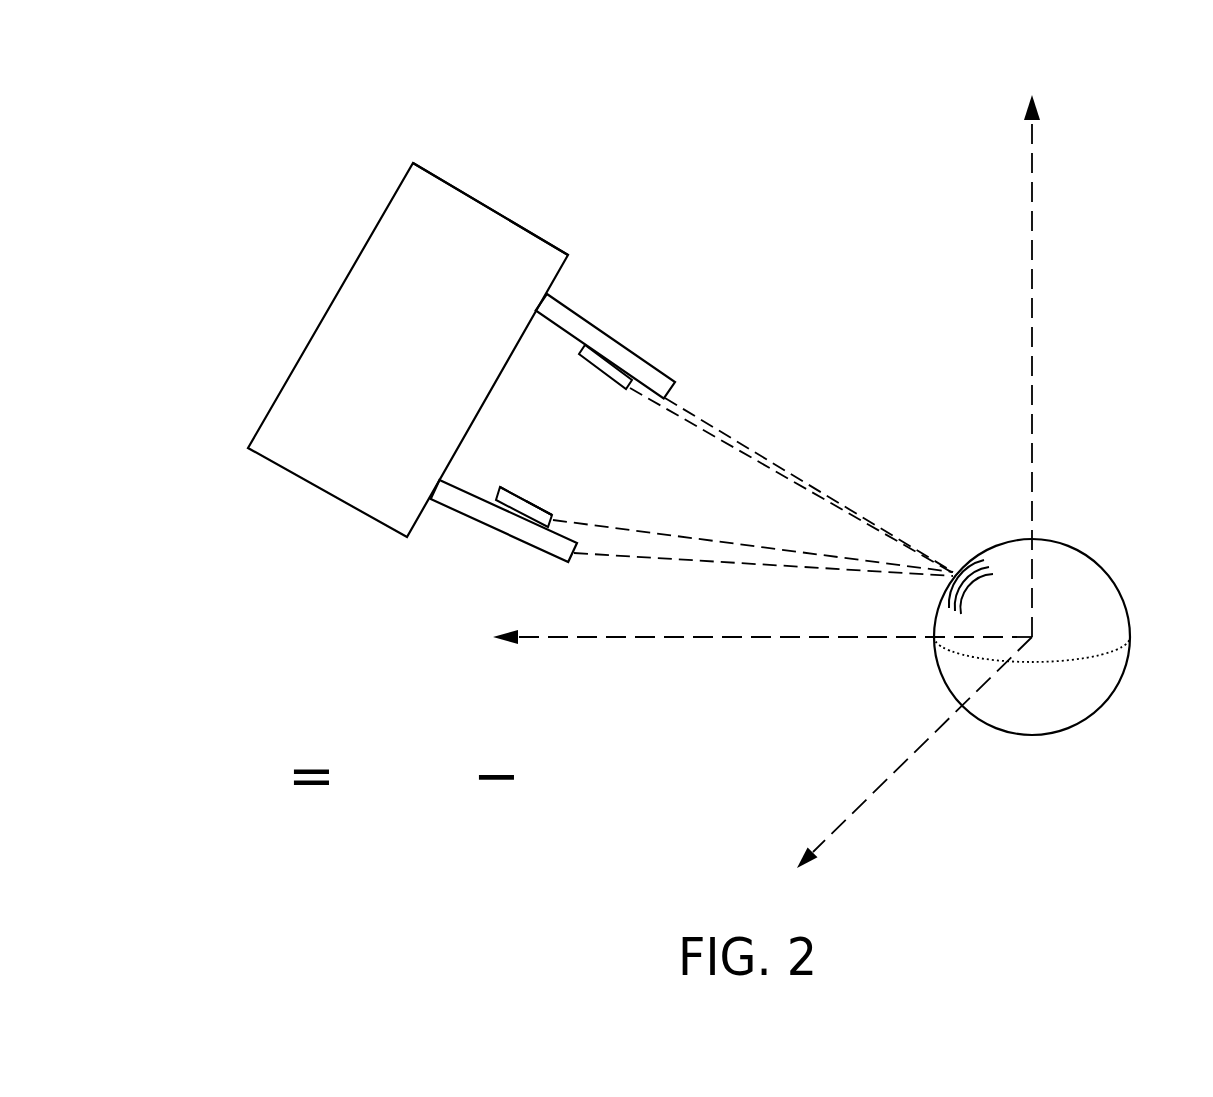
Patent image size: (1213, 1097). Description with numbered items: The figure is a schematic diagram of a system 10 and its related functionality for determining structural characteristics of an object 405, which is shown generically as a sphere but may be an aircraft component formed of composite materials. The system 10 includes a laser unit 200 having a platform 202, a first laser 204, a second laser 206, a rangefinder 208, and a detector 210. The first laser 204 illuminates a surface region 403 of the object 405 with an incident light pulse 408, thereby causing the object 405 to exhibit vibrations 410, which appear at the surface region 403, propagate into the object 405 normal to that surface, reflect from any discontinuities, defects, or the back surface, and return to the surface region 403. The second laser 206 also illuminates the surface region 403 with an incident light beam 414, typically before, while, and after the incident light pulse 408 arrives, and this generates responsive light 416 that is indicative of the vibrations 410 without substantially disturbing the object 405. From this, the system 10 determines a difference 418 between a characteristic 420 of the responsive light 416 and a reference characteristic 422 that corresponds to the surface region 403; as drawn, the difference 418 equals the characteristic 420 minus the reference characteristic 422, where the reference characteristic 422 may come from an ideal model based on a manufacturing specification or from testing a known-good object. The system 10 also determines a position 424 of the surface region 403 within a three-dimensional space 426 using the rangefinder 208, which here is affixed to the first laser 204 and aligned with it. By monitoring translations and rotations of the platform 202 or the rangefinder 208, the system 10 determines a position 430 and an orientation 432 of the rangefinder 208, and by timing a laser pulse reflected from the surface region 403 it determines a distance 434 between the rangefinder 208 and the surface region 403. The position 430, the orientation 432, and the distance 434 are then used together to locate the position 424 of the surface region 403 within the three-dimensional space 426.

The system 10 is at (402, 118).
The laser unit 200 is at (313, 270).
The platform 202 is at (507, 218).
The first laser 204 is at (487, 526).
The second laser 206 is at (600, 330).
The rangefinder 208 is at (495, 497).
The detector 210 is at (593, 366).
The surface region 403 is at (952, 552).
The object 405 is at (1105, 567).
The incident light pulse 408 is at (672, 560).
The vibrations 410 is at (988, 589).
The incident light beam 414 is at (768, 459).
The responsive light 416 is at (727, 443).
The difference 418 is at (213, 830).
The characteristic 420 is at (382, 830).
The reference characteristic 422 is at (563, 832).
The position 424 is at (953, 575).
The three-dimensional space 426 is at (1060, 225).
The position 430 is at (537, 496).
The orientation 432 is at (507, 475).
The distance 434 is at (618, 527).